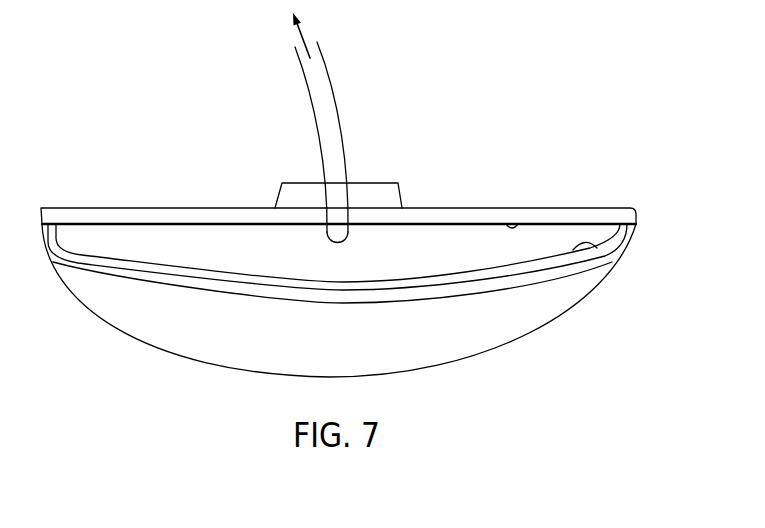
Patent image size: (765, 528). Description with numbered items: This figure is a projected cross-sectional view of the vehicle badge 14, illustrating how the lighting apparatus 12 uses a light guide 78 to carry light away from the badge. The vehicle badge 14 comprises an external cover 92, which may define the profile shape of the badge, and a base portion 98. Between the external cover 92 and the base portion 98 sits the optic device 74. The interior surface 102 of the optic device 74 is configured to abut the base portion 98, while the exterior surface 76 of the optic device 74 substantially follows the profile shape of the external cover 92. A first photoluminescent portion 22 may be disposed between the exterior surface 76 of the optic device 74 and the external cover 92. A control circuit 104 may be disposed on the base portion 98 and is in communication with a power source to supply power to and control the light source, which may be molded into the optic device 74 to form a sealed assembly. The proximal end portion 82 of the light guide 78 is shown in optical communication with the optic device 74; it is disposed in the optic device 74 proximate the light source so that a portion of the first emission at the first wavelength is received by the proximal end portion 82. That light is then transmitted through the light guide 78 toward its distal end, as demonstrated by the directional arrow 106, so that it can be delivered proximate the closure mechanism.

The lighting apparatus 12 is at (196, 117).
The vehicle badge 14 is at (553, 77).
The first photoluminescent portion 22 is at (160, 270).
The optic device 74 is at (598, 236).
The exterior surface 76 is at (597, 244).
The light guide 78 is at (315, 103).
The proximal end portion 82 is at (337, 228).
The external cover 92 is at (557, 298).
The base portion 98 is at (600, 217).
The interior surface 102 is at (520, 223).
The control circuit 104 is at (383, 188).
The directional arrow 106 is at (303, 35).